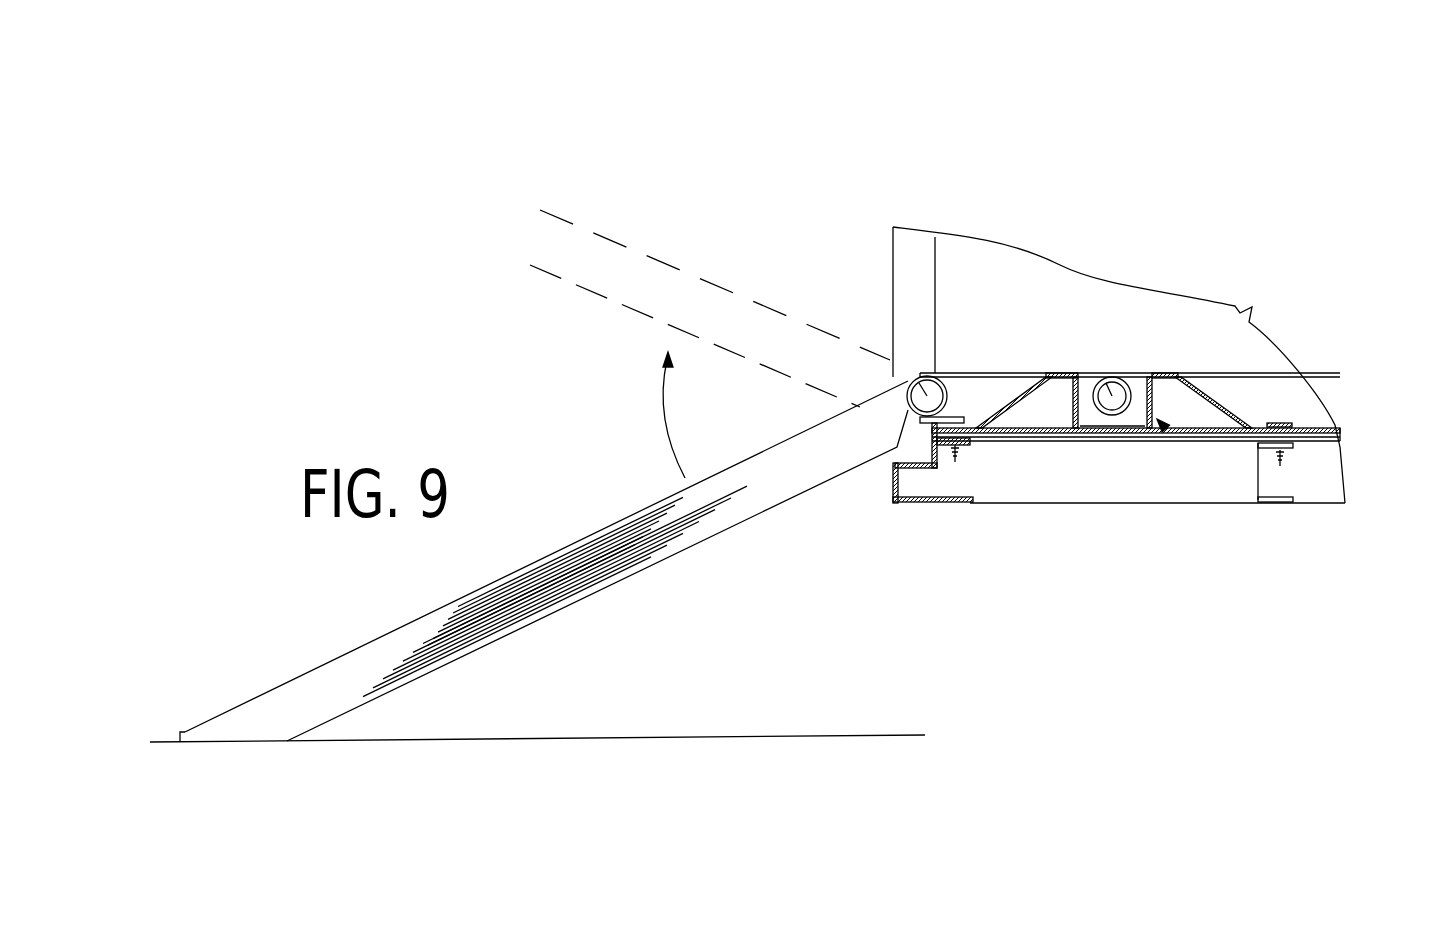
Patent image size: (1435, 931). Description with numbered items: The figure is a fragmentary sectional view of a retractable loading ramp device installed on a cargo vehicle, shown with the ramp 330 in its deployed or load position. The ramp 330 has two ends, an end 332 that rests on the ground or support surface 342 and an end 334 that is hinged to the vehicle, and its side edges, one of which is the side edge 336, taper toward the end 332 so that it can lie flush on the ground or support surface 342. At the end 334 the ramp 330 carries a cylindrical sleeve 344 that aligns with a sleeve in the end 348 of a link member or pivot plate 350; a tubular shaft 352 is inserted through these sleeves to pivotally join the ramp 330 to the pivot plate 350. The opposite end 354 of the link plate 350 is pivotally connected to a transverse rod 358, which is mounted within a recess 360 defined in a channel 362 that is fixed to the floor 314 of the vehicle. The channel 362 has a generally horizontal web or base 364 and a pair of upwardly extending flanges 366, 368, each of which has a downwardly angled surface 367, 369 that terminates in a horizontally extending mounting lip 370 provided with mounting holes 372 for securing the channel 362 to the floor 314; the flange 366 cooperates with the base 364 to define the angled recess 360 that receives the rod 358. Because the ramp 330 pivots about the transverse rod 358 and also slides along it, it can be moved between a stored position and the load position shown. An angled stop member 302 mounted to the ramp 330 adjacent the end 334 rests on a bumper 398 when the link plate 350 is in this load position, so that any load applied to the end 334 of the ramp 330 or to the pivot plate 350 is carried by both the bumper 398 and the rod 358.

The angled stop member 302 is at (967, 385).
The floor 314 is at (1313, 427).
The ramp 330 is at (546, 561).
The end 332 is at (202, 724).
The end 334 is at (835, 373).
The side edge 336 is at (801, 498).
The ground or support surface 342 is at (587, 737).
The cylindrical sleeve 344 is at (903, 412).
The end of link plate 348 is at (943, 373).
The link member or pivot plate 350 is at (1027, 380).
The tubular shaft 352 is at (912, 377).
The end of link plate 354 is at (1097, 375).
The transverse rod 358 is at (1115, 375).
The recess 360 is at (1090, 417).
The channel 362 is at (1150, 398).
The web or base 364 is at (1133, 437).
The flange 366 is at (1063, 412).
The downwardly angled surface 367 is at (1015, 390).
The flange 368 is at (1164, 427).
The downwardly angled surface 369 is at (1208, 380).
The mounting lip 370 is at (1262, 427).
The mounting holes 372 is at (1280, 427).
The bumper 398 is at (893, 467).